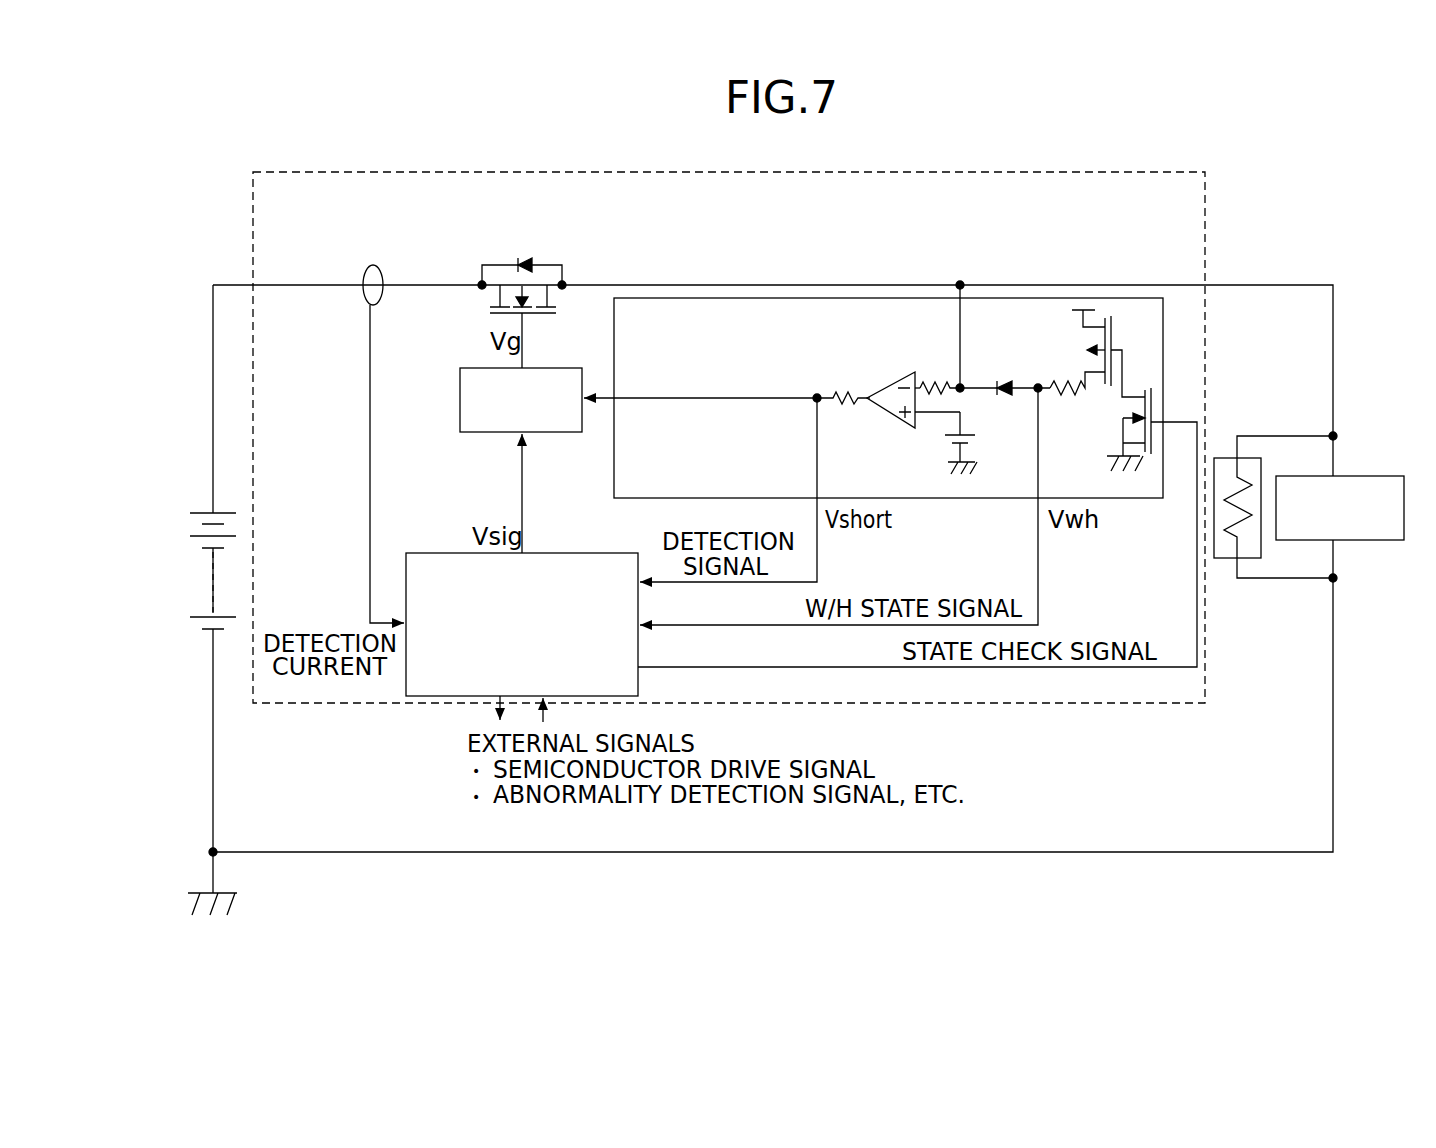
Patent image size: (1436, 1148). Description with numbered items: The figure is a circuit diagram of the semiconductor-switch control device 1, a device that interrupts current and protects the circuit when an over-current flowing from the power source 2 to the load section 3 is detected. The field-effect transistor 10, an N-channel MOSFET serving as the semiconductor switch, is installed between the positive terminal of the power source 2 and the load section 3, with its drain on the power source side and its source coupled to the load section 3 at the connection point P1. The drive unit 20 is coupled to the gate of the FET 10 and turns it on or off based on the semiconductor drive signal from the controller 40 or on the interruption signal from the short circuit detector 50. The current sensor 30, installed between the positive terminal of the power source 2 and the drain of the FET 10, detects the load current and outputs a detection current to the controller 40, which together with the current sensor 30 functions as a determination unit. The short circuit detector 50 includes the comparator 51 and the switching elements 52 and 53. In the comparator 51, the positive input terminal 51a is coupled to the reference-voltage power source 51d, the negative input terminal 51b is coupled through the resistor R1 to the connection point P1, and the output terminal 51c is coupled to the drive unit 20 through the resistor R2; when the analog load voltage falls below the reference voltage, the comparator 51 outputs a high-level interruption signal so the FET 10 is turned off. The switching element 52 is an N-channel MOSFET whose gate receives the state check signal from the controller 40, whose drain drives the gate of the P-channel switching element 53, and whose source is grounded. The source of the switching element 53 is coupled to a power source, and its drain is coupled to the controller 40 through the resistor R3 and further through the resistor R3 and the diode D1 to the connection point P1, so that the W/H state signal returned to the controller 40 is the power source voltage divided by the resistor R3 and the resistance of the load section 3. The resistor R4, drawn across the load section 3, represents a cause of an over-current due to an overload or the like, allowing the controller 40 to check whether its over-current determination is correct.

The semiconductor-switch control device 1 is at (1178, 171).
The power source 2 is at (203, 497).
The load section 3 is at (1356, 476).
The field-effect transistor 10 is at (552, 246).
The drive unit 20 is at (542, 368).
The current sensor 30 is at (378, 266).
The controller 40 is at (567, 553).
The short circuit detector 50 is at (1165, 327).
The comparator 51 is at (883, 372).
The positive input terminal 51a is at (923, 416).
The negative input terminal 51b is at (918, 376).
The output terminal 51c is at (873, 412).
The reference-voltage power source 51d is at (977, 438).
The switching element 52 is at (1110, 425).
The switching element 53 is at (1120, 334).
The resistor R1 is at (940, 384).
The resistor R2 is at (845, 393).
The resistor R3 is at (1058, 385).
The resistor R4 is at (1225, 560).
The diode D1 is at (1007, 383).
The connection point P1 is at (966, 283).